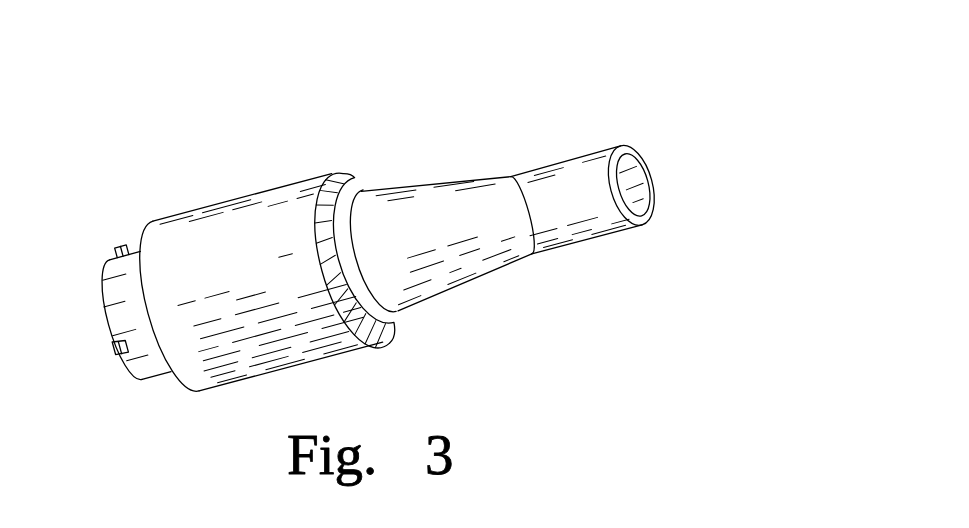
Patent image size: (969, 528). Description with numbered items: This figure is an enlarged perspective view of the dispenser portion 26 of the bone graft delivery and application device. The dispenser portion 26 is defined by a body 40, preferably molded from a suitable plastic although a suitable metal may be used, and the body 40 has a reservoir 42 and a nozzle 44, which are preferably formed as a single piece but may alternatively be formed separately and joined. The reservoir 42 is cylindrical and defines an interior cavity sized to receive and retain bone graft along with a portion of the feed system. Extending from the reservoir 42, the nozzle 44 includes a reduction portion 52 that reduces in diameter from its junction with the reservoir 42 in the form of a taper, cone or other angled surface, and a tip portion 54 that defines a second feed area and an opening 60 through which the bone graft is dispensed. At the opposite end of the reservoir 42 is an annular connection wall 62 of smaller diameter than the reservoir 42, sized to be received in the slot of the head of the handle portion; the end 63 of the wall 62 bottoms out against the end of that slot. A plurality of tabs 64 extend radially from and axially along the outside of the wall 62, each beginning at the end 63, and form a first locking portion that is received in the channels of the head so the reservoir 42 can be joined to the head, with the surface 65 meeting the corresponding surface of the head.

The dispenser portion 26 is at (150, 109).
The body 40 is at (335, 152).
The reservoir 42 is at (250, 373).
The nozzle 44 is at (487, 174).
The reduction portion 52 is at (423, 293).
The tip portion 54 is at (575, 236).
The opening 60 is at (646, 188).
The wall 62 is at (120, 297).
The end 63 is at (102, 307).
The tabs 64 is at (115, 245).
The surface 65 is at (152, 225).